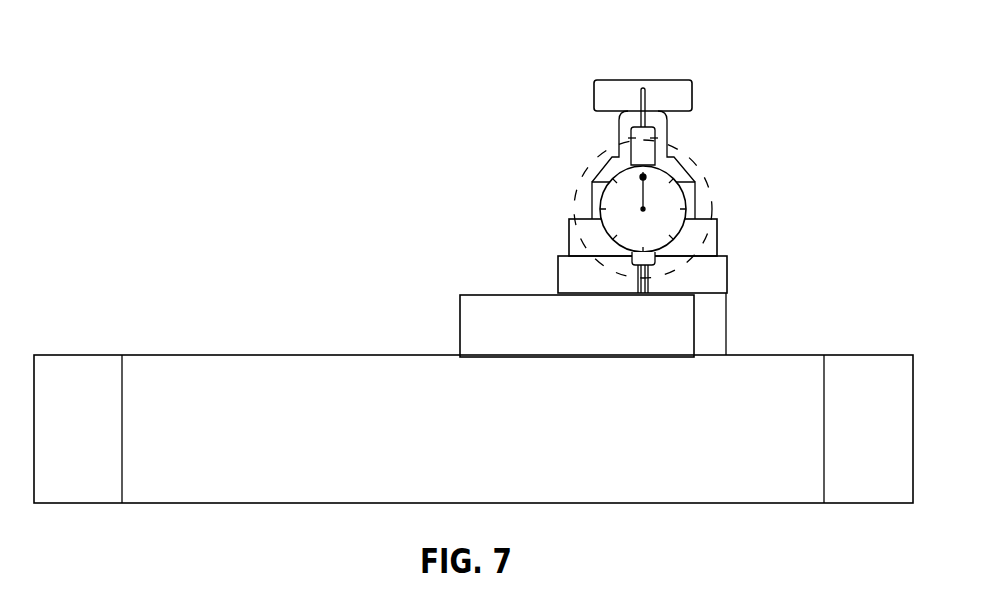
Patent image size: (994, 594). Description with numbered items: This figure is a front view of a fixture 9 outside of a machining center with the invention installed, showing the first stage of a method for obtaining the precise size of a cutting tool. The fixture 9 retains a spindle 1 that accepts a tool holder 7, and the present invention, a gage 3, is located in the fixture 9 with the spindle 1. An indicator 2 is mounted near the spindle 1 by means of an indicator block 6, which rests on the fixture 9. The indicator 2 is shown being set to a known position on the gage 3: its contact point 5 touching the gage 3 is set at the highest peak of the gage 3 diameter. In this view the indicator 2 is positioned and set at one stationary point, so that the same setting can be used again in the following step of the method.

The spindle 1 is at (718, 238).
The indicator 2 is at (588, 177).
The gage 3 is at (593, 93).
The contact point 5 is at (647, 83).
The indicator block 6 is at (490, 295).
The tool holder 7 is at (687, 172).
The fixture 9 is at (183, 355).